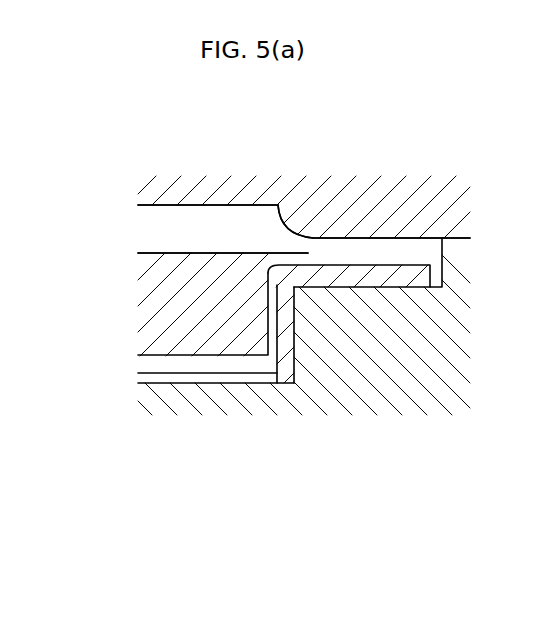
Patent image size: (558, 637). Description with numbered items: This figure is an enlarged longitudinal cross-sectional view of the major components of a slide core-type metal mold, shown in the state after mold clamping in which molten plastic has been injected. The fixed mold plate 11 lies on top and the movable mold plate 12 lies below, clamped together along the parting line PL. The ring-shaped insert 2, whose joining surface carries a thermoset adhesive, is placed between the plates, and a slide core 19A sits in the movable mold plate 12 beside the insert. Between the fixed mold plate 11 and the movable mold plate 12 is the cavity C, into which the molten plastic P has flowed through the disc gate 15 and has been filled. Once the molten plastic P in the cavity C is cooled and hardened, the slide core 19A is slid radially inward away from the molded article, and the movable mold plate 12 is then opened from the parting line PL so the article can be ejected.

The fixed mold plate 11 is at (386, 212).
The movable mold plate 12 is at (432, 395).
The slide core 19A is at (202, 335).
The ring-shaped insert 2 is at (348, 284).
The disc gate 15 is at (278, 206).
The cavity C is at (170, 229).
The molten plastic P is at (211, 222).
The parting line PL is at (444, 240).